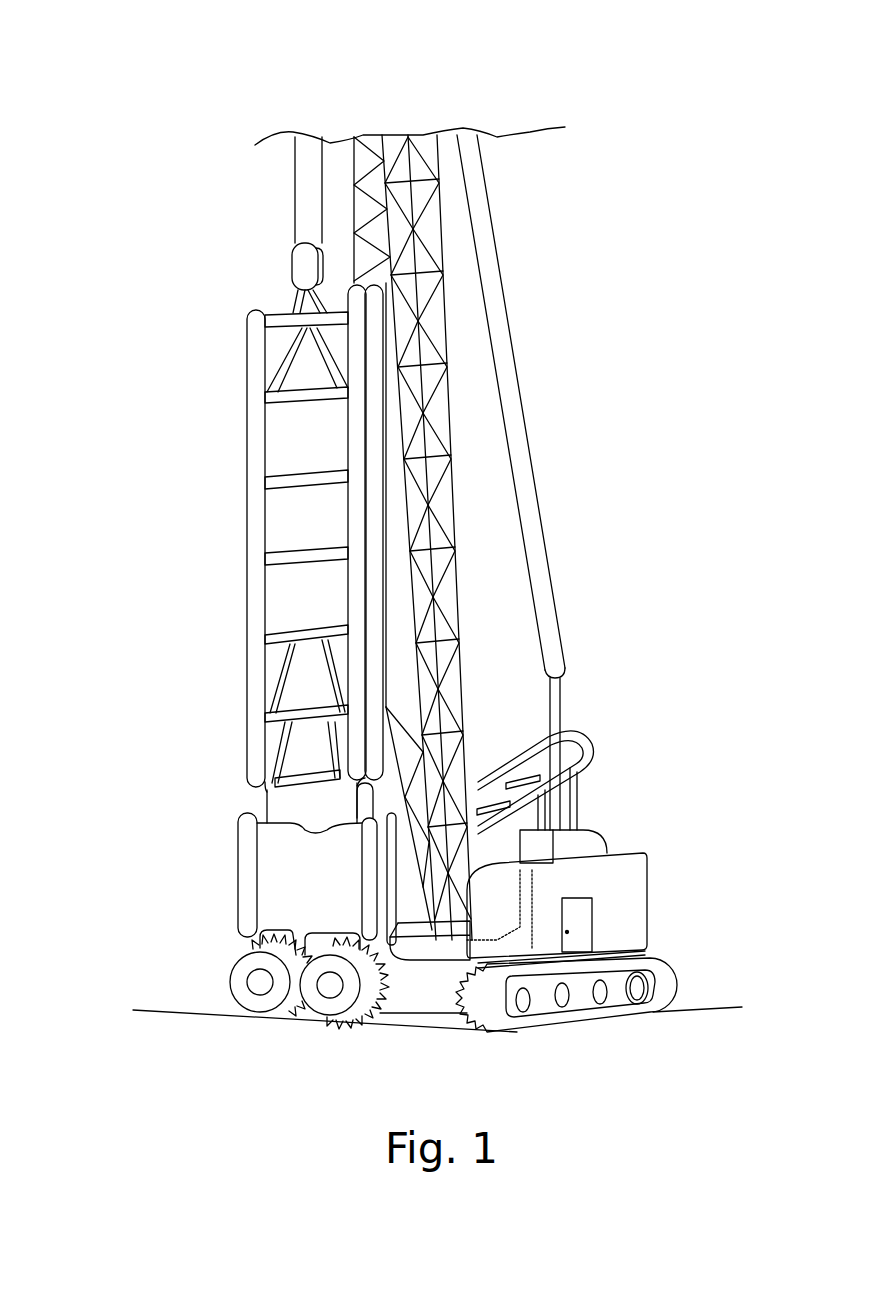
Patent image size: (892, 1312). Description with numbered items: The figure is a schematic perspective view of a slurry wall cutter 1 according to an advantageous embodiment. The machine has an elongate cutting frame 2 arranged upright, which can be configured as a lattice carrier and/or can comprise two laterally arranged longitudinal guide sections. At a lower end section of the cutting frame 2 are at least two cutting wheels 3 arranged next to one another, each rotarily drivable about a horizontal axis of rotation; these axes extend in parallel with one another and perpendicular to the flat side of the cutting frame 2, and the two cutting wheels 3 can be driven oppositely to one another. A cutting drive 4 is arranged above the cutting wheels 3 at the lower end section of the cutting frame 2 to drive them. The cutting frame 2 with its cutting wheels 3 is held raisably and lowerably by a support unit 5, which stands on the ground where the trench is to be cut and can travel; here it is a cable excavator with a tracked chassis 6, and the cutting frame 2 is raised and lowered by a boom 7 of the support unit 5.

The slurry wall cutter 1 is at (206, 963).
The cutting frame 2 is at (257, 532).
The cutting wheels 3 is at (240, 982).
The cutting drive 4 is at (279, 856).
The support unit 5 is at (640, 903).
The tracked chassis 6 is at (657, 987).
The boom 7 is at (388, 128).